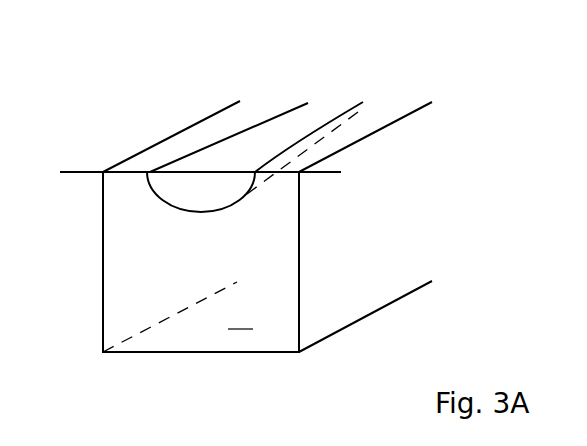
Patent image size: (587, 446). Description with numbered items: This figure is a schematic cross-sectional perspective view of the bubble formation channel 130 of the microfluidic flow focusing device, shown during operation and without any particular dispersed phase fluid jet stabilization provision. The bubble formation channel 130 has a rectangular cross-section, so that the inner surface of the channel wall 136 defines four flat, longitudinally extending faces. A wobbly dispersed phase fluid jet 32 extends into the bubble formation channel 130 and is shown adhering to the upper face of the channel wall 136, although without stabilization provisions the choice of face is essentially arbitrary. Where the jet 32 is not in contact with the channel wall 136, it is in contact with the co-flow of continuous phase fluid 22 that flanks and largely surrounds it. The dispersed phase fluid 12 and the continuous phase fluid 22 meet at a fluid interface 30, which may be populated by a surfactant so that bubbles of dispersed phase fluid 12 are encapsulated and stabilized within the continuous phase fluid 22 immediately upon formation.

The dispersed phase fluid 12 is at (212, 199).
The continuous phase fluid 22 is at (246, 262).
The fluid interface 30 is at (167, 202).
The dispersed phase fluid jet 32 is at (262, 142).
The bubble formation channel 130 is at (206, 338).
The channel wall 136 is at (123, 286).